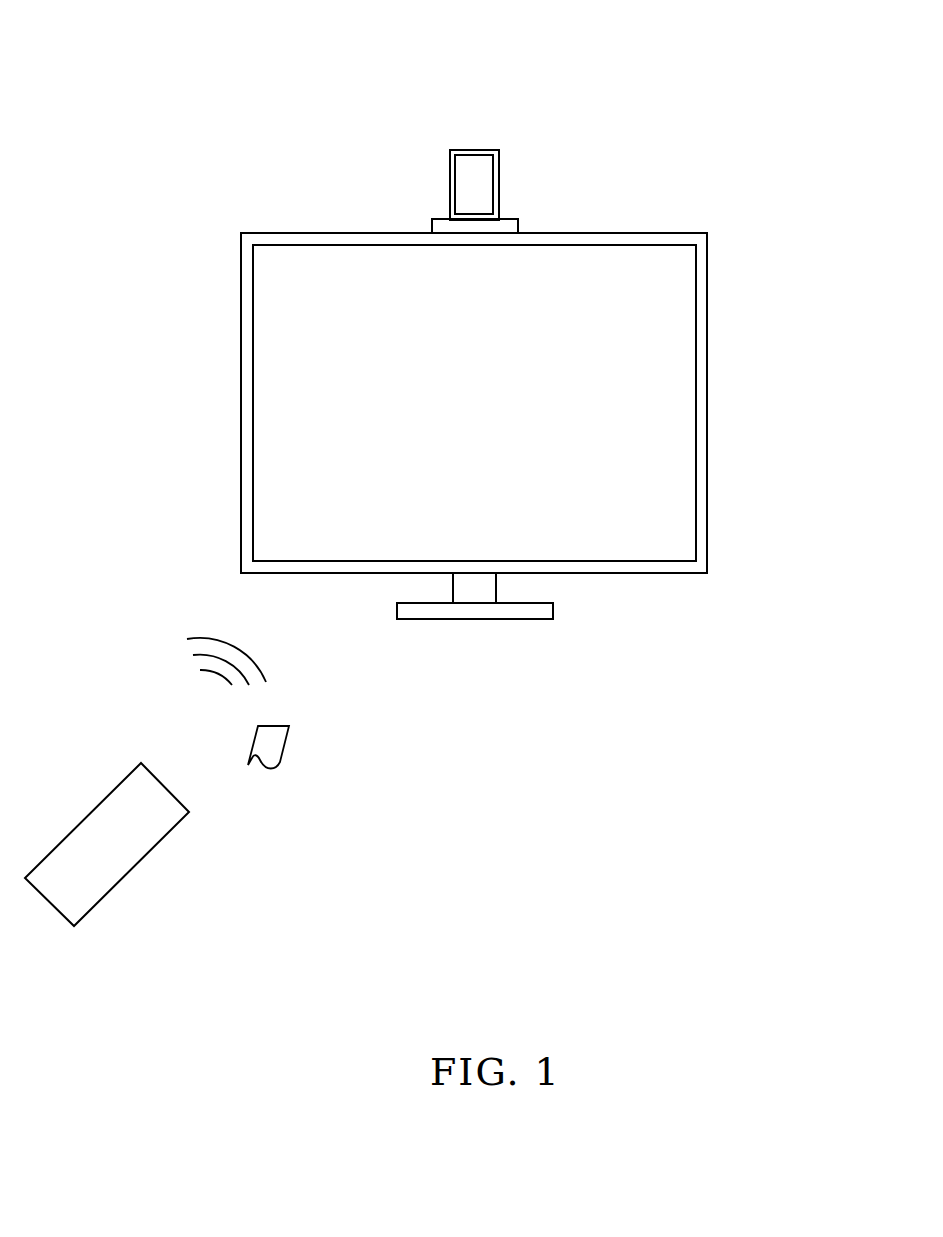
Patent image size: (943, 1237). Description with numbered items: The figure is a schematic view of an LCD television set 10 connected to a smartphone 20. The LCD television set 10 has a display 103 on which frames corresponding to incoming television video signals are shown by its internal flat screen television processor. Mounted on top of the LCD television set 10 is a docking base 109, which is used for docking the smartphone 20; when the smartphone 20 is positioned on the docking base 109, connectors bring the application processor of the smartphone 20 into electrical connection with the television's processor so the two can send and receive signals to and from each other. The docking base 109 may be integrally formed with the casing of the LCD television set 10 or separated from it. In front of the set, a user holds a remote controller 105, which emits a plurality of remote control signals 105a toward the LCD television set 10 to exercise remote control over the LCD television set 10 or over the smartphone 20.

The LCD television set 10 is at (188, 195).
The smartphone 20 is at (474, 162).
The display 103 is at (662, 318).
The remote controller 105 is at (123, 829).
The remote control signals 105a is at (270, 747).
The docking base 109 is at (516, 222).